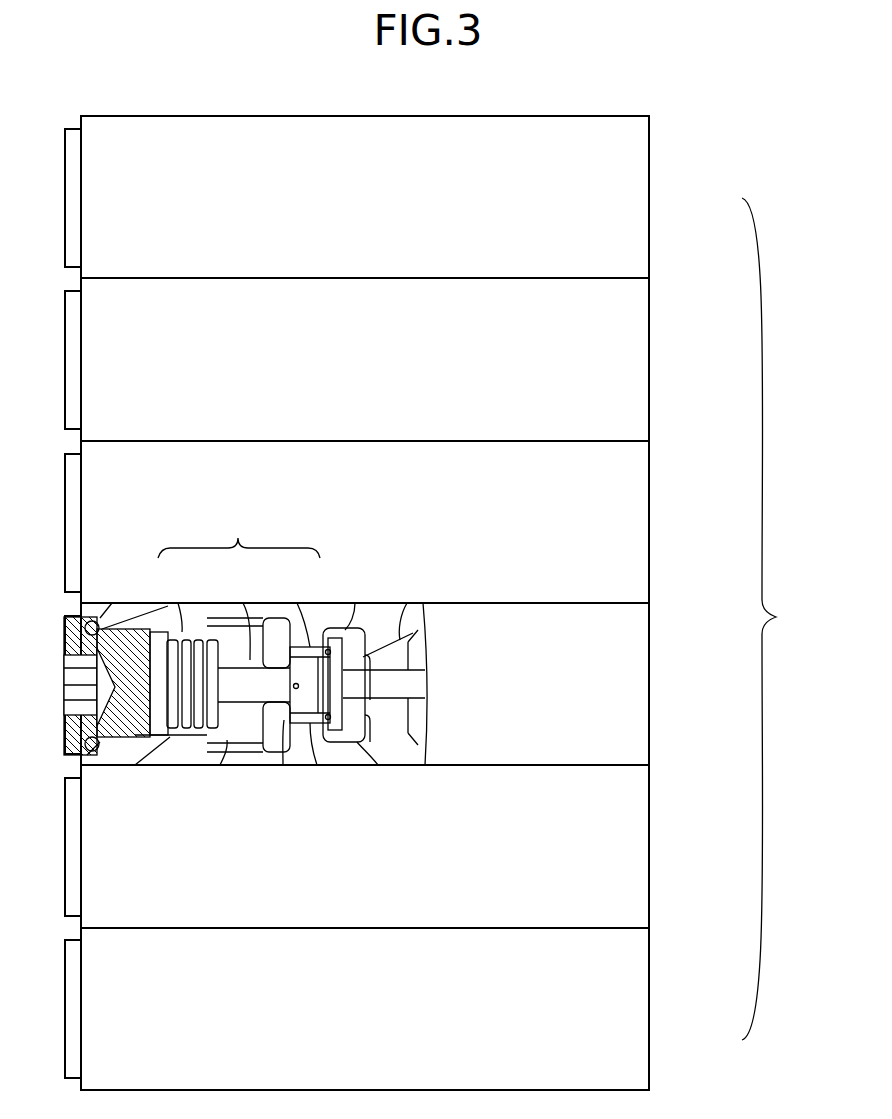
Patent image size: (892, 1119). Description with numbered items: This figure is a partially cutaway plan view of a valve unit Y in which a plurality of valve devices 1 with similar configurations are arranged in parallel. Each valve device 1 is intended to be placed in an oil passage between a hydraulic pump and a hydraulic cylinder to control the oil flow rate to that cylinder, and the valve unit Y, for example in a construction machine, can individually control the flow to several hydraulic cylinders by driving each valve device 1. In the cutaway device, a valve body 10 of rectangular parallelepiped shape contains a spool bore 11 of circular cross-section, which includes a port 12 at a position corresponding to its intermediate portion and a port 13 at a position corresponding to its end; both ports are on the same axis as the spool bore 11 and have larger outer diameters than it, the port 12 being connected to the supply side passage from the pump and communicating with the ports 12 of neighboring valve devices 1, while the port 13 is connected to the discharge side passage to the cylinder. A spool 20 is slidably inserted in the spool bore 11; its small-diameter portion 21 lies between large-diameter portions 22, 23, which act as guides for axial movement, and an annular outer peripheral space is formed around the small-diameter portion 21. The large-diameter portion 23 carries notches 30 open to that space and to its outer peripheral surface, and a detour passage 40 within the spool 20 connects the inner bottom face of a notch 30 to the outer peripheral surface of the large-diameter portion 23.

The valve device 1 is at (679, 1045).
The valve body 10 is at (630, 174).
The spool bore 11 is at (288, 723).
The port 12 is at (216, 752).
The port 13 is at (362, 742).
The spool 20 is at (239, 537).
The small-diameter portion 21 is at (244, 620).
The large-diameter portion 22 is at (172, 617).
The large-diameter portion 23 is at (310, 629).
The notch 30 is at (342, 688).
The detour passage 40 is at (66, 630).
The valve unit Y is at (771, 619).